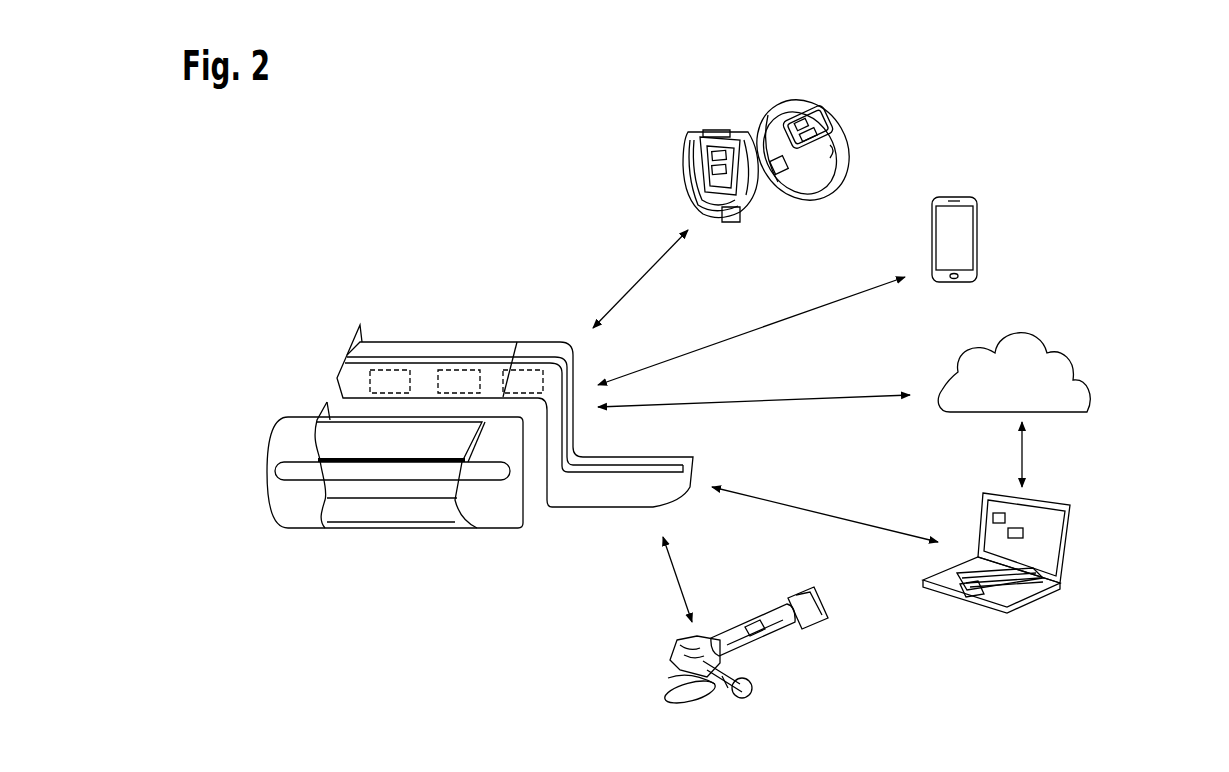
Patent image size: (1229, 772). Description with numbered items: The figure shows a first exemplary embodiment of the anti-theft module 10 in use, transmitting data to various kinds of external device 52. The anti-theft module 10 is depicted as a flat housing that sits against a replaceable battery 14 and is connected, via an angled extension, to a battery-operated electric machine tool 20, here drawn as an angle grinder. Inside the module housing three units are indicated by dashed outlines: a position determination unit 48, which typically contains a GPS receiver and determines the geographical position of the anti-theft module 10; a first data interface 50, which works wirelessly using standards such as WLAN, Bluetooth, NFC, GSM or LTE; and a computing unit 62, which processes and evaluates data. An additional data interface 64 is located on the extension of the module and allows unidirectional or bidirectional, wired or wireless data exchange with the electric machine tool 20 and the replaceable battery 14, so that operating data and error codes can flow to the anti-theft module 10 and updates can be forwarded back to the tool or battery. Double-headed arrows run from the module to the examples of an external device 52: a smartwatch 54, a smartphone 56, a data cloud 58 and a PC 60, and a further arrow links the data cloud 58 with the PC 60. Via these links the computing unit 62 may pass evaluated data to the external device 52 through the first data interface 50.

The anti-theft module 10 is at (342, 378).
The replaceable battery 14 is at (362, 510).
The position determination unit 48 is at (398, 380).
The first data interface 50 is at (463, 380).
The computing unit 62 is at (536, 380).
The additional data interface 64 is at (585, 493).
The battery-operated electric machine tool 20 is at (745, 630).
The external device 52 is at (932, 395).
The smartwatch 54 is at (827, 130).
The smartphone 56 is at (960, 238).
The data cloud 58 is at (1058, 370).
The PC 60 is at (1047, 538).